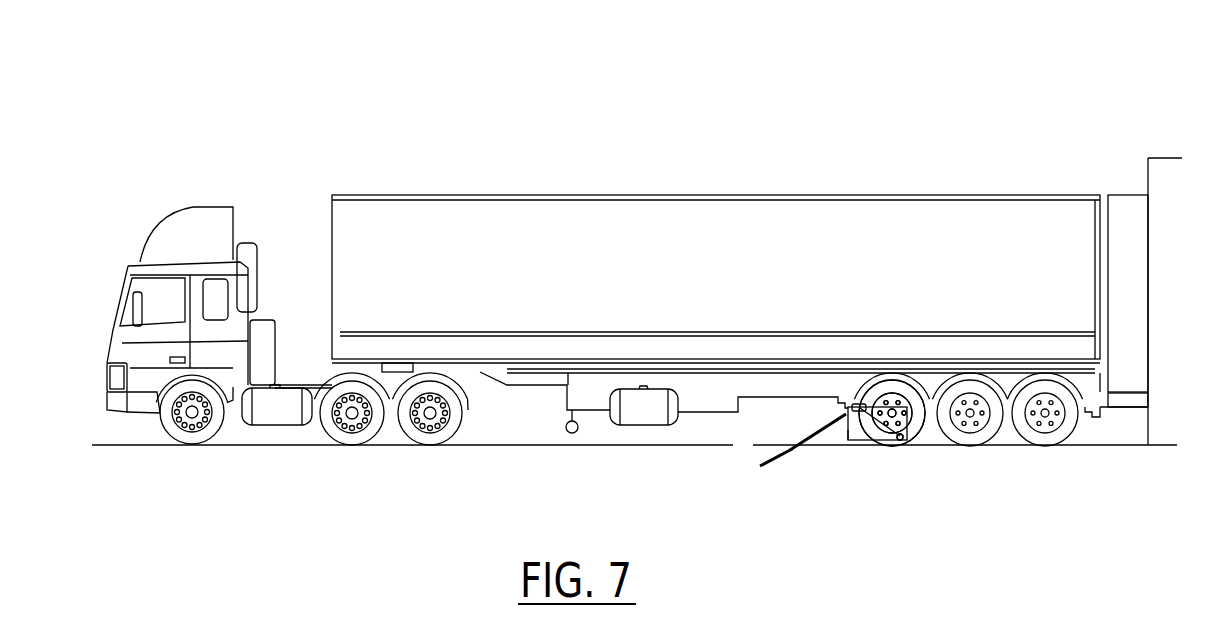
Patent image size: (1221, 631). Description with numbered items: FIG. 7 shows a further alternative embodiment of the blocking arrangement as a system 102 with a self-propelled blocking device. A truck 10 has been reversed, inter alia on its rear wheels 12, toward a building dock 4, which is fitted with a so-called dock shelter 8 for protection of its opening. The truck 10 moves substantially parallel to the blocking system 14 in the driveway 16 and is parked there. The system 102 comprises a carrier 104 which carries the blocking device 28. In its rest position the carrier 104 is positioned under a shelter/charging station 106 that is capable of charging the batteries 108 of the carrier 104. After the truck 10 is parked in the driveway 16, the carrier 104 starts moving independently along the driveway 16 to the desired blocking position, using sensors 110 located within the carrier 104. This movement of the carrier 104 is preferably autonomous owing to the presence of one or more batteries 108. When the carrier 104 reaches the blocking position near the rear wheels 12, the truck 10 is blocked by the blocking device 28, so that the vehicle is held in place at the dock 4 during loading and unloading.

The dock 4 is at (1163, 170).
The dock shelter 8 is at (1128, 212).
The truck 10 is at (618, 217).
The rear wheels 12 is at (898, 393).
The blocking system 14 is at (795, 471).
The driveway 16 is at (102, 432).
The blocking device 28 is at (882, 418).
The system 102 is at (858, 126).
The carrier 104 is at (900, 453).
The shelter/charging station 106 is at (1132, 400).
The batteries 108 is at (847, 457).
The sensors 110 is at (770, 463).